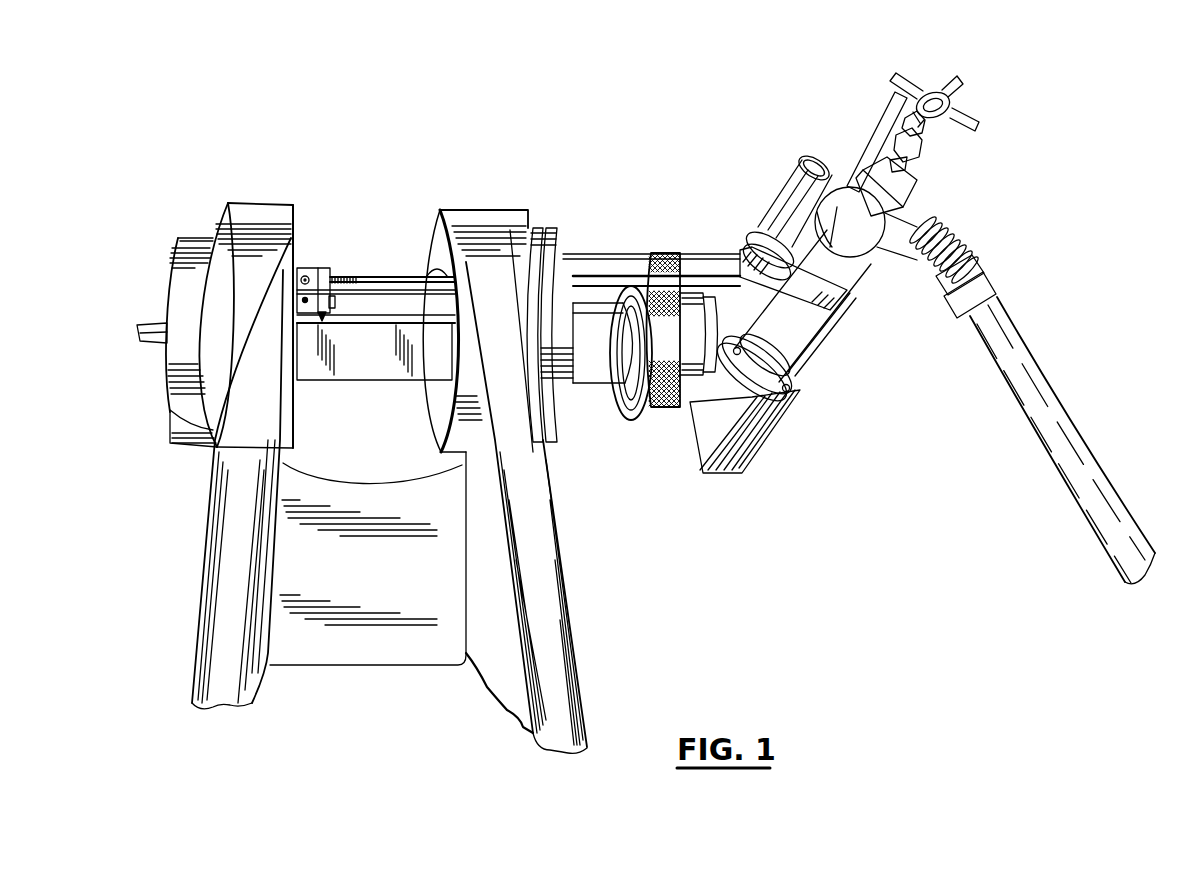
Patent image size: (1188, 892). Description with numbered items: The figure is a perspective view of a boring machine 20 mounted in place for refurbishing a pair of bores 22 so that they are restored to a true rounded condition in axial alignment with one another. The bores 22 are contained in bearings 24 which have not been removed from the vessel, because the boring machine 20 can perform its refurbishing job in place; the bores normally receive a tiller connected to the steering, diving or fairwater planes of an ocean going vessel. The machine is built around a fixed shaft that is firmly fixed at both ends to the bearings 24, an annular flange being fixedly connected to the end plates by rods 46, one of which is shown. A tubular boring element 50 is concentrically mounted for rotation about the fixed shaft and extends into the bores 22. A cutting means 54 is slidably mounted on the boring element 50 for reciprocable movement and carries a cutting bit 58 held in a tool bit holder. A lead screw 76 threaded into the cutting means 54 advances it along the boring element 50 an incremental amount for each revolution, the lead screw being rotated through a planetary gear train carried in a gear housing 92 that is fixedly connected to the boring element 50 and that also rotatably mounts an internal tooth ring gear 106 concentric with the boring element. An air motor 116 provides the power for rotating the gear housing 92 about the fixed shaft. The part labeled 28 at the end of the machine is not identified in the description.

The boring machine 20 is at (590, 221).
The bores 22 is at (422, 267).
The bearings 24 is at (275, 203).
The hand wheel 28 is at (208, 236).
The rods 46 is at (707, 290).
The tubular boring element 50 is at (353, 368).
The cutting means 54 is at (322, 316).
The cutting bit 58 is at (303, 290).
The lead screw 76 is at (402, 282).
The gear housing 92 is at (690, 413).
The internal tooth ring gear 106 is at (647, 414).
The air motor 116 is at (810, 320).